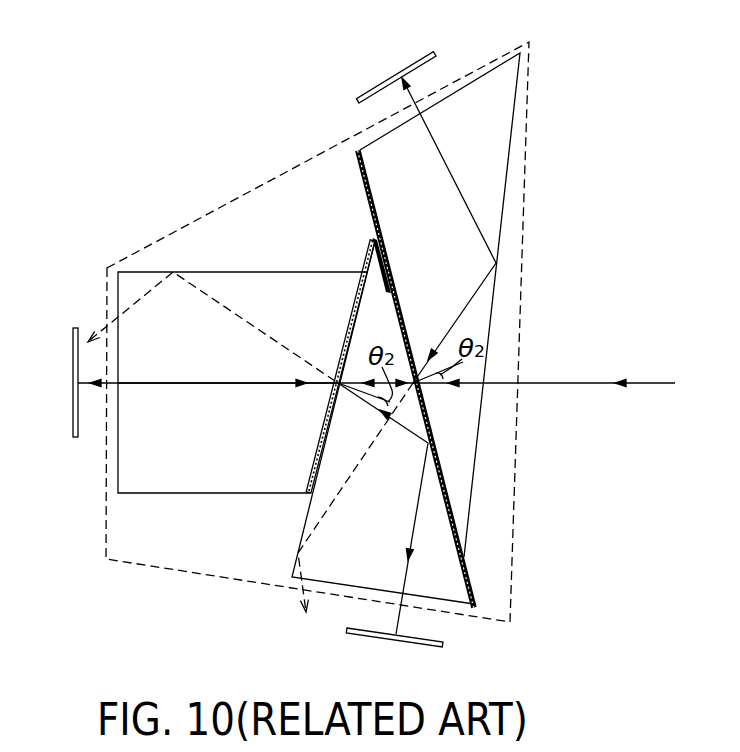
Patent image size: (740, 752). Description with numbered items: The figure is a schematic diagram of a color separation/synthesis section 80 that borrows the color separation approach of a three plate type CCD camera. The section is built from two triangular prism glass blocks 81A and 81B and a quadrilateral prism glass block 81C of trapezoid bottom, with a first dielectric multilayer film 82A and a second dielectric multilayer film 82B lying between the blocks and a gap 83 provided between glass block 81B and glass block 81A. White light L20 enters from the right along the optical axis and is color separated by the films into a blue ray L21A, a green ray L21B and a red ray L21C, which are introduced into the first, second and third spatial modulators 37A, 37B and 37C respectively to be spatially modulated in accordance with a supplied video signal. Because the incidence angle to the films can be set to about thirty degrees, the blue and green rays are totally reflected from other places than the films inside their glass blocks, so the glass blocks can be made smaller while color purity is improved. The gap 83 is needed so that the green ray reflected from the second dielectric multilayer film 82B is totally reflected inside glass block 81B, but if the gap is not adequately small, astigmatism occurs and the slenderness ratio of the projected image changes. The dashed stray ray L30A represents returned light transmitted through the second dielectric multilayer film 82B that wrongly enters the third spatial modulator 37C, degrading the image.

The color separation/synthesis section 80 is at (532, 44).
The triangular prism glass block 81A is at (511, 127).
The triangular prism glass block 81B is at (471, 606).
The quadrilateral prism glass block 81C is at (243, 272).
The first dielectric multilayer film 82A is at (375, 241).
The second dielectric multilayer film 82B is at (309, 482).
The gap 83 is at (468, 563).
The first spatial modulator 37A is at (434, 53).
The second spatial modulator 37B is at (350, 630).
The third spatial modulator 37C is at (74, 437).
The white light L20 is at (667, 362).
The blue ray L21A is at (471, 213).
The green ray L21B is at (404, 627).
The red ray L21C is at (197, 385).
The stray ray L30A is at (233, 312).